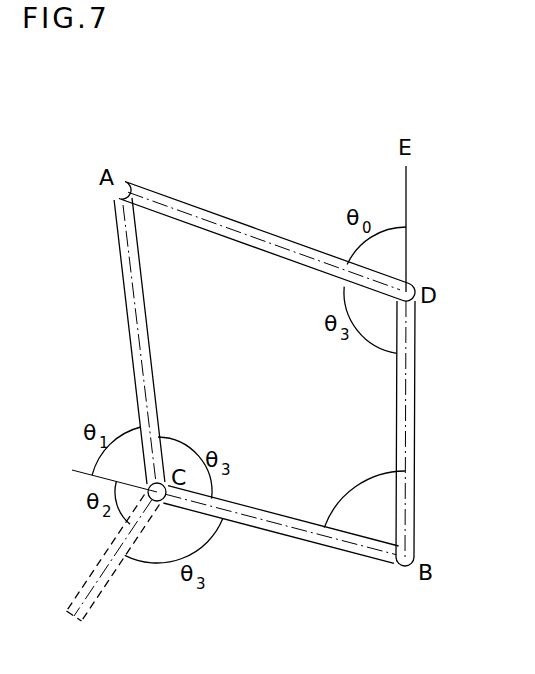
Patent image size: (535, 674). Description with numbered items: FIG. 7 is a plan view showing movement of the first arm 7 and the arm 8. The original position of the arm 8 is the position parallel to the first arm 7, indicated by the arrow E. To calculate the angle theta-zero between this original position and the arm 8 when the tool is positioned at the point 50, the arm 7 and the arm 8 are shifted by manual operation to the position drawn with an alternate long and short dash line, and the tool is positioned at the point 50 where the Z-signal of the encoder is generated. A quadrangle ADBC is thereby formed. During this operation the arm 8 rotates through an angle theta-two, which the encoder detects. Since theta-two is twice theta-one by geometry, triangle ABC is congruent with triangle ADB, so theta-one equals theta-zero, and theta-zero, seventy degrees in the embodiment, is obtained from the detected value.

The point 50 is at (268, 376).
The arm 8 is at (265, 229).
The first arm 7 is at (415, 420).